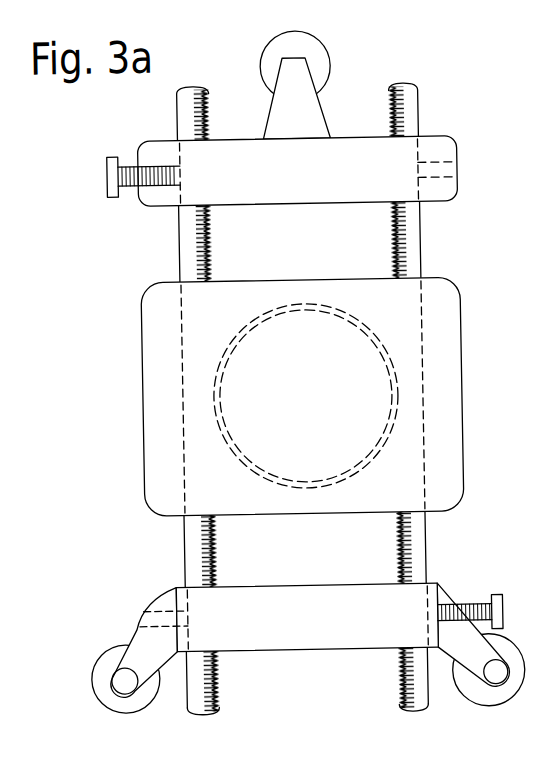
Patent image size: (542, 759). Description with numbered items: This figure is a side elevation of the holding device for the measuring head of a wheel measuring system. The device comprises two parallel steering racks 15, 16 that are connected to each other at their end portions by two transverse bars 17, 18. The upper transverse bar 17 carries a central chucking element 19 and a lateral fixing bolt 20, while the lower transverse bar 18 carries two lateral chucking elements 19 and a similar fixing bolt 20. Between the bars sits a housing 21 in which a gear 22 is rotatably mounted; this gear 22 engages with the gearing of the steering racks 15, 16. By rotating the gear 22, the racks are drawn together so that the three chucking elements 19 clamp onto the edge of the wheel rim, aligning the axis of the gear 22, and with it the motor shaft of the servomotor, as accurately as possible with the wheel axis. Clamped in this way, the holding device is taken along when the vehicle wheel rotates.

The steering rack 15 is at (183, 235).
The steering rack 16 is at (427, 230).
The transverse bar 17 is at (287, 183).
The lower transverse bar 18 is at (304, 630).
The chucking element 19 is at (328, 67).
The fixing bolt 20 is at (112, 175).
The housing 21 is at (464, 341).
The gear 22 is at (308, 491).